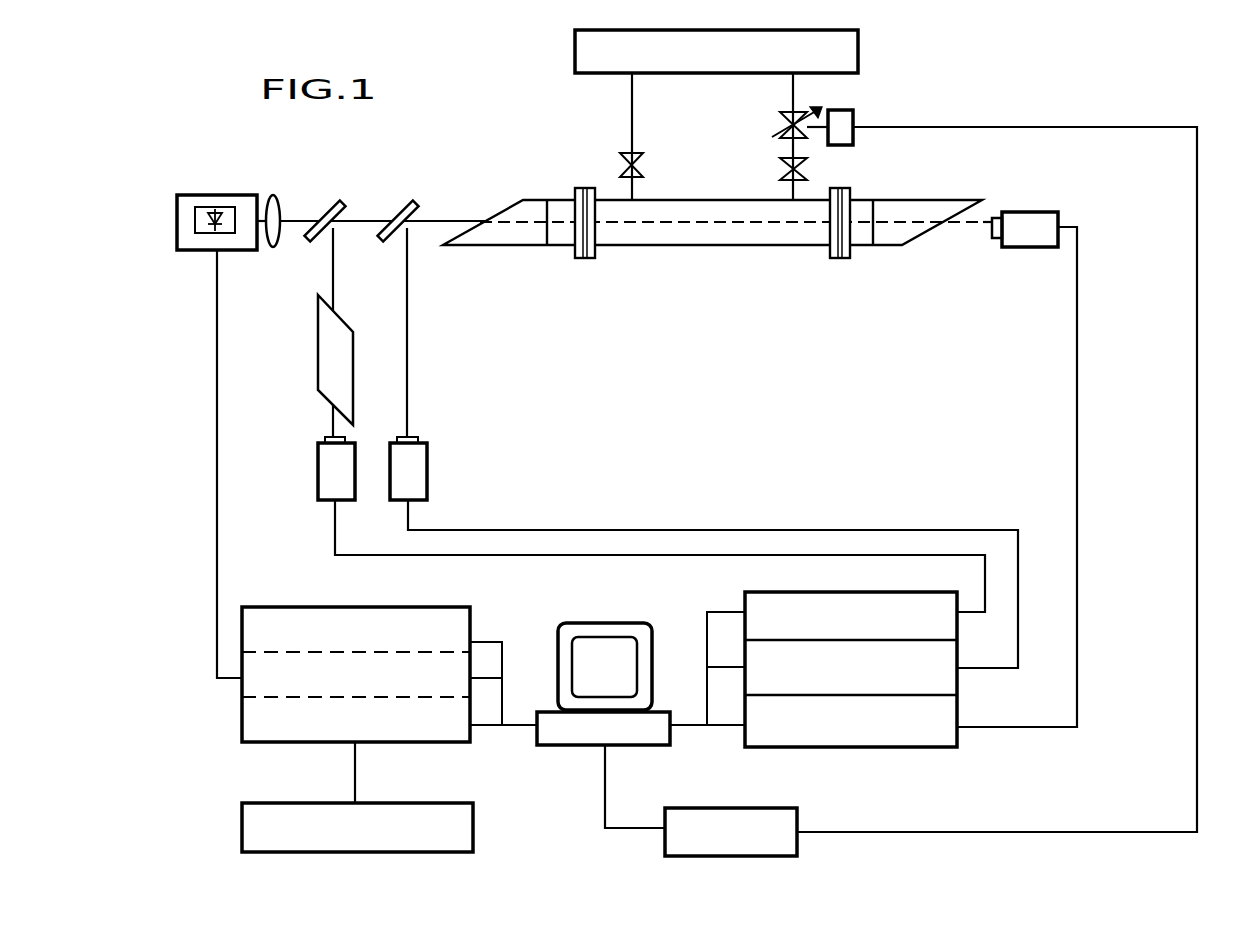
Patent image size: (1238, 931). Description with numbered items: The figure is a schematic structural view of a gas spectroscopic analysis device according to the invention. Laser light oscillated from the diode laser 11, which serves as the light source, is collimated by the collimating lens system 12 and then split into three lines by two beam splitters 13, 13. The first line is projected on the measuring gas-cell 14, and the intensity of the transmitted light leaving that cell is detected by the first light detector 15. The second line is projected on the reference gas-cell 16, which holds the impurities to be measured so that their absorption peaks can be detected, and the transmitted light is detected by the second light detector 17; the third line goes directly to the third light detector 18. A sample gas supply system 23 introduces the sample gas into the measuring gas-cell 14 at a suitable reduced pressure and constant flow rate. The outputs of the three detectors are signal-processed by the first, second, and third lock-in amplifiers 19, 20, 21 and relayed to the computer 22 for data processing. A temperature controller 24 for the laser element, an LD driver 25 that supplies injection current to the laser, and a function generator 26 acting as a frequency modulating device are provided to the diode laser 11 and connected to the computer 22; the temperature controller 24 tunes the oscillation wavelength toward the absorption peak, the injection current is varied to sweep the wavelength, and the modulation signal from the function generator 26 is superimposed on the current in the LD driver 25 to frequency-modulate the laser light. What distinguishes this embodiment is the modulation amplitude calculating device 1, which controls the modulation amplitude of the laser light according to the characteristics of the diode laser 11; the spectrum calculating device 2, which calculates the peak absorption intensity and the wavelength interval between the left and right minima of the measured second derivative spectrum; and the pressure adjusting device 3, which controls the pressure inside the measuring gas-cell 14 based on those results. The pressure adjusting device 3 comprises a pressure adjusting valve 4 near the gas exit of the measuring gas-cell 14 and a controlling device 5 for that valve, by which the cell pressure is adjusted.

The modulation amplitude calculating device 1 is at (475, 830).
The spectrum calculating device 2 is at (800, 815).
The pressure adjusting device 3 is at (962, 80).
The pressure adjusting valve 4 is at (805, 112).
The controlling device 5 is at (855, 117).
The diode laser 11 is at (218, 195).
The collimating lens system 12 is at (276, 195).
The beam splitters 13 is at (328, 207).
The measuring gas-cell 14 is at (528, 200).
The first light detector 15 is at (1028, 212).
The reference gas-cell 16 is at (318, 338).
The second light detector 17 is at (318, 462).
The third light detector 18 is at (427, 462).
The first lock-in amplifier 19 is at (957, 710).
The second lock-in amplifier 20 is at (760, 592).
The third lock-in amplifier 21 is at (957, 656).
The computer 22 is at (612, 623).
The sample gas supply system 23 is at (575, 45).
The temperature controller 24 is at (430, 608).
The LD driver 25 is at (242, 688).
The function generator 26 is at (458, 742).